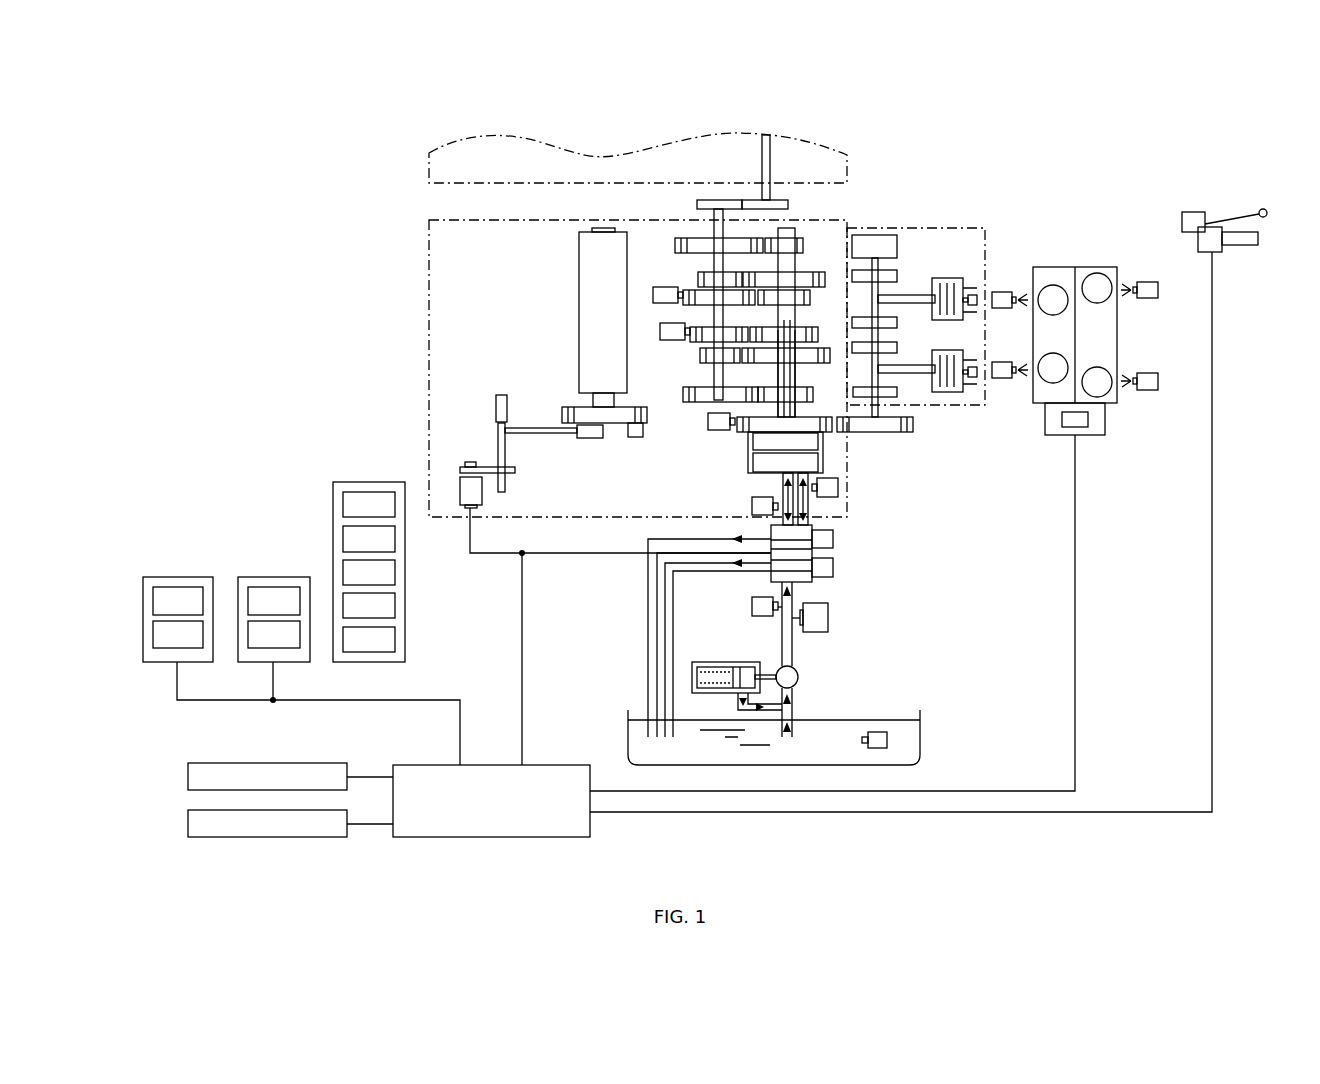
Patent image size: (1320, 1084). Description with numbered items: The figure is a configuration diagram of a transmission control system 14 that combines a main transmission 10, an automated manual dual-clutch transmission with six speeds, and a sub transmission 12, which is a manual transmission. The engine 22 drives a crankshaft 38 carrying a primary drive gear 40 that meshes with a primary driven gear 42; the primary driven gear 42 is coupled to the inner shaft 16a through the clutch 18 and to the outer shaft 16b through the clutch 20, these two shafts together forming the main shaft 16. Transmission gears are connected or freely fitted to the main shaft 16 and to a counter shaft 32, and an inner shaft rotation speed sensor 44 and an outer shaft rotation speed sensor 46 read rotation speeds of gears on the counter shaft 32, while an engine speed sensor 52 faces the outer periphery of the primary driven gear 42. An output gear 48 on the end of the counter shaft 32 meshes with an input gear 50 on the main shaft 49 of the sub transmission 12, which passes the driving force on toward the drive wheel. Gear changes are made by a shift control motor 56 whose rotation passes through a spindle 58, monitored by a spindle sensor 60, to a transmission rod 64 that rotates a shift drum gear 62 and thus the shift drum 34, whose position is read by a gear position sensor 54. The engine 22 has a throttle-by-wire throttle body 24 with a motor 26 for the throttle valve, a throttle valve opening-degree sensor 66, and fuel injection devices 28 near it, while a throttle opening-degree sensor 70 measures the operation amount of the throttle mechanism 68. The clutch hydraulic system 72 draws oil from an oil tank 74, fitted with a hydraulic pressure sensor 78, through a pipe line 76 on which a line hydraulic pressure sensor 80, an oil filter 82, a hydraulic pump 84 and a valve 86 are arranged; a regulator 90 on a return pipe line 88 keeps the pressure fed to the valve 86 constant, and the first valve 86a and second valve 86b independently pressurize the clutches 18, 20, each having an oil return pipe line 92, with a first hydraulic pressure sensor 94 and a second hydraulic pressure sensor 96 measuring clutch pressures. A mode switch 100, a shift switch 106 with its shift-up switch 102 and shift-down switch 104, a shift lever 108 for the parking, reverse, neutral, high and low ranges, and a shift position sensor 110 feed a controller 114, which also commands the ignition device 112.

The main transmission 10 is at (422, 259).
The sub transmission 12 is at (429, 176).
The transmission control system 14 is at (905, 165).
The main shaft 16 is at (803, 372).
The inner shaft 16a is at (790, 406).
The outer shaft 16b is at (778, 409).
The clutch 18 is at (818, 465).
The clutch 20 is at (818, 442).
The engine 22 is at (966, 222).
The throttle body 24 is at (1117, 332).
The motor 26 is at (1045, 410).
The fuel injection device 28 is at (1001, 362).
The counter shaft 32 is at (722, 380).
The shift drum 34 is at (627, 252).
The crankshaft 38 is at (880, 414).
The primary drive gear 40 is at (905, 432).
The primary driven gear 42 is at (748, 445).
The inner shaft rotation speed sensor 44 is at (665, 287).
The outer shaft rotation speed sensor 46 is at (673, 340).
The output gear 48 is at (697, 206).
The main shaft 49 is at (770, 170).
The input gear 50 is at (788, 204).
The engine speed sensor 52 is at (708, 425).
The gear position sensor 54 is at (588, 438).
The shift control motor 56 is at (482, 495).
The spindle 58 is at (498, 435).
The spindle sensor 60 is at (503, 395).
The shift drum gear 62 is at (622, 423).
The transmission rod 64 is at (531, 428).
The throttle valve opening-degree sensor 66 is at (1088, 420).
The throttle mechanism 68 is at (1247, 254).
The throttle opening-degree sensor 70 is at (1182, 214).
The clutch hydraulic system 72 is at (928, 688).
The oil tank 74 is at (628, 745).
The pipe line 76 is at (792, 598).
The hydraulic pressure sensor 78 is at (878, 732).
The line hydraulic pressure sensor 80 is at (752, 603).
The oil filter 82 is at (828, 620).
The hydraulic pump 84 is at (798, 680).
The valve 86 is at (900, 530).
The first valve 86a is at (833, 540).
The second valve 86b is at (833, 566).
The return pipe line 88 is at (738, 706).
The regulator 90 is at (710, 662).
The oil return pipe line 92 is at (665, 634).
The first hydraulic pressure sensor 94 is at (838, 487).
The second hydraulic pressure sensor 96 is at (752, 505).
The mode switch 100 is at (252, 577).
The shift-up switch 102 is at (203, 595).
The shift-down switch 104 is at (185, 648).
The shift switch 106 is at (158, 577).
The shift lever 108 is at (350, 482).
The shift position sensor 110 is at (188, 824).
The ignition device 112 is at (188, 777).
The controller 114 is at (432, 765).